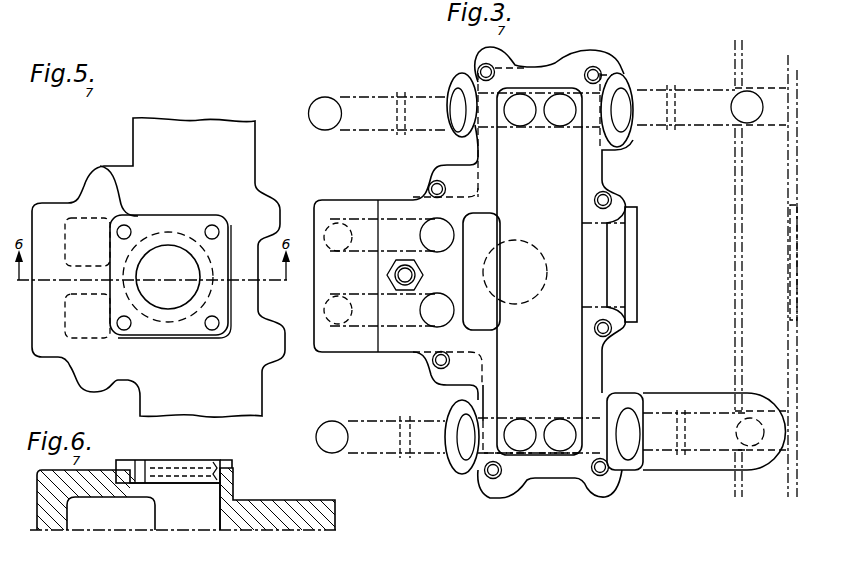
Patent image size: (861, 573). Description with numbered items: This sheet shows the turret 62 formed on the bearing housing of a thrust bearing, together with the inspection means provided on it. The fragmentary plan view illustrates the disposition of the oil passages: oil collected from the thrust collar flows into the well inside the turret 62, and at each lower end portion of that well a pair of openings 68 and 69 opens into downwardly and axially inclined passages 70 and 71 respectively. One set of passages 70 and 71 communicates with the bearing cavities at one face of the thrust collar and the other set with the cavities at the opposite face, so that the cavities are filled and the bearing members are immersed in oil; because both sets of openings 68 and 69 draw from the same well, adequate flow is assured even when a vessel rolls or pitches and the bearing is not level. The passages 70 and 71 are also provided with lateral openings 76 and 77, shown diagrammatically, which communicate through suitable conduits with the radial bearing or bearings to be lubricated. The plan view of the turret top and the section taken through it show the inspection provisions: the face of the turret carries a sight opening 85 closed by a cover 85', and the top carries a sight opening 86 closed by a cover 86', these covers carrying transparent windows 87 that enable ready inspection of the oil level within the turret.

In FIG. 3, the turret 62 is at (586, 364).
In FIG. 5, the turret 62 is at (178, 135).
In FIG. 3, the openings 68 is at (566, 420).
In FIG. 3, the openings 69 is at (558, 96).
In FIG. 3, the passages 70 is at (383, 448).
In FIG. 3, the passages 71 is at (356, 101).
In FIG. 3, the lateral openings 76 is at (411, 451).
In FIG. 3, the lateral openings 77 is at (410, 96).
In FIG. 3, the sight opening 85 is at (539, 261).
In FIG. 3, the cover 85' is at (650, 264).
In FIG. 5, the sight opening 86 is at (169, 255).
In FIG. 6, the sight opening 86 is at (184, 514).
In FIG. 5, the cover 86' is at (190, 270).
In FIG. 6, the cover 86' is at (111, 503).
In FIG. 5, the transparent windows 87 is at (177, 300).
In FIG. 6, the transparent windows 87 is at (160, 473).